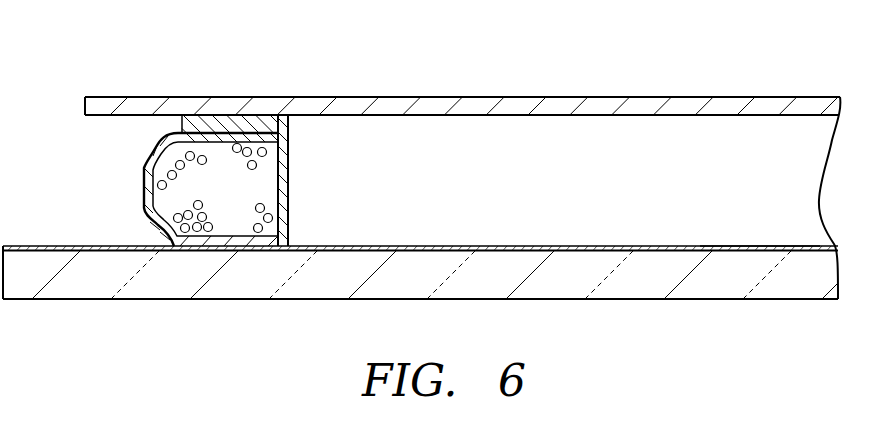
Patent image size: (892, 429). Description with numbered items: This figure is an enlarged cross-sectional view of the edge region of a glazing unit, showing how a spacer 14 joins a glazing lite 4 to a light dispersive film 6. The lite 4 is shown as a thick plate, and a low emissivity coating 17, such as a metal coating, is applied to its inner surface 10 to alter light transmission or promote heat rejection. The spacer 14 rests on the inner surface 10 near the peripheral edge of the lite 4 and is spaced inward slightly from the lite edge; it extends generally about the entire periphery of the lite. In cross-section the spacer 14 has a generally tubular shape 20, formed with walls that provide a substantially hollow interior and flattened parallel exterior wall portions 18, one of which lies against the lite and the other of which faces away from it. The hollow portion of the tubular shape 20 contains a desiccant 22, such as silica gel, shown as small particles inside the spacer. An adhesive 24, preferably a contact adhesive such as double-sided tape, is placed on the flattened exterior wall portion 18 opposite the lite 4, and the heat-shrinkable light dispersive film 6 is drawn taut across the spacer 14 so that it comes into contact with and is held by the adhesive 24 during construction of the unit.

The glazing lite 4 is at (778, 299).
The light dispersive film 6 is at (737, 96).
The inner surface 10 is at (752, 245).
The spacer 14 is at (132, 207).
The low emissivity coating 17 is at (502, 245).
The flattened parallel exterior wall portion 18 is at (245, 136).
The tubular shape 20 is at (197, 178).
The desiccant 22 is at (264, 207).
The adhesive 24 is at (288, 123).